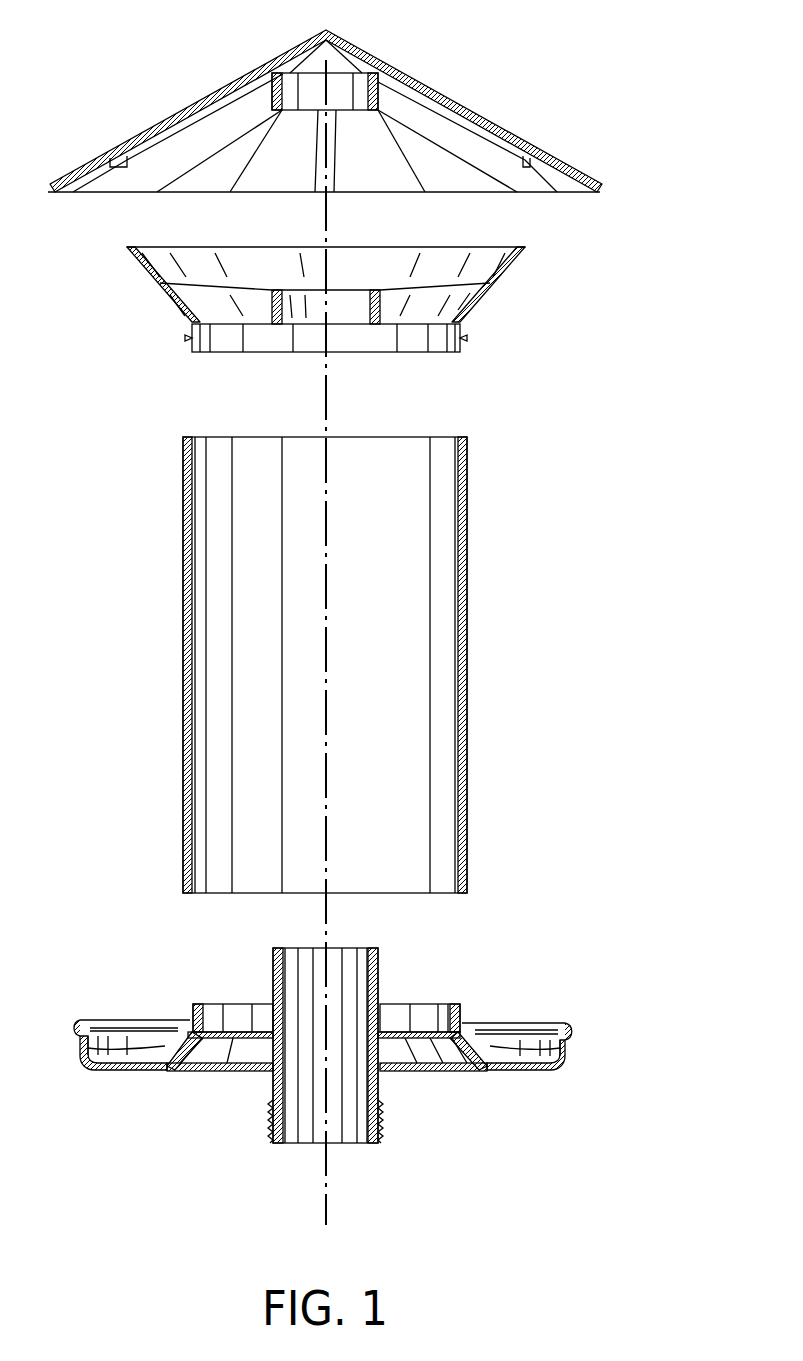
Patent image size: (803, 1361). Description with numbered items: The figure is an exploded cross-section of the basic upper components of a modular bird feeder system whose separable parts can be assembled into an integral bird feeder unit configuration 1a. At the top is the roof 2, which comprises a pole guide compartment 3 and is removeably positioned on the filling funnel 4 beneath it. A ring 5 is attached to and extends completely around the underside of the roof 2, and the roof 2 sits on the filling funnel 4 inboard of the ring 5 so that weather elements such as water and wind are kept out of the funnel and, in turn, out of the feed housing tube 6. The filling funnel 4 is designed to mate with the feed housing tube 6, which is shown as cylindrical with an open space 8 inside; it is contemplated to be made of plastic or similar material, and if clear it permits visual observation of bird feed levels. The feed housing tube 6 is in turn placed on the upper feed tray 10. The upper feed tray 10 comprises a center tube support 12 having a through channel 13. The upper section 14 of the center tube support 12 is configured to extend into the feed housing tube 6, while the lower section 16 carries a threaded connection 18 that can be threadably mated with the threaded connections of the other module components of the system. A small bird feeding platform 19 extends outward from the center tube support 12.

The bird feeder unit configuration 1a is at (540, 125).
The roof 2 is at (196, 108).
The pole guide compartment 3 is at (341, 84).
The filling funnel 4 is at (515, 255).
The ring 5 is at (105, 166).
The feed housing tube 6 is at (468, 487).
The open space 8 is at (408, 604).
The upper feed tray 10 is at (458, 1006).
The center tube support 12 is at (381, 1057).
The through channel 13 is at (341, 965).
The upper section 14 is at (272, 968).
The lower section 16 is at (271, 1104).
The threaded connection 18 is at (381, 1120).
The small bird feeding platform 19 is at (522, 1025).